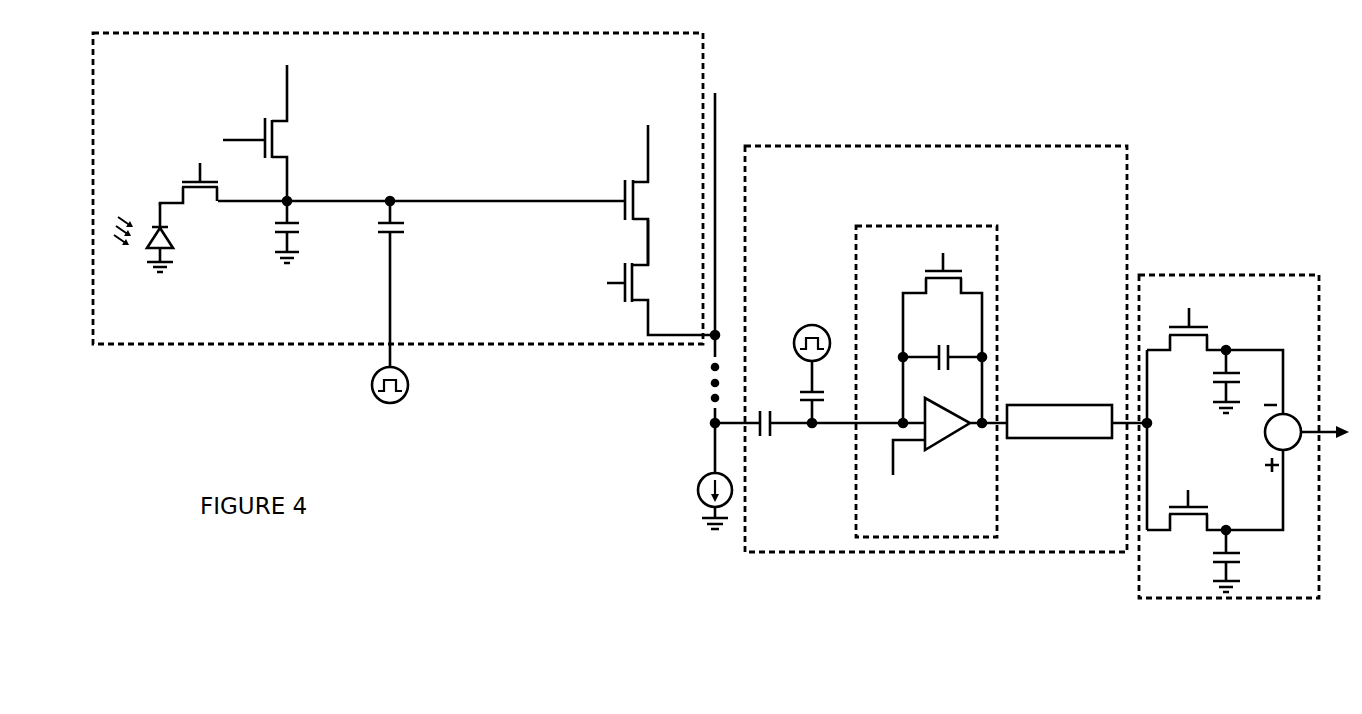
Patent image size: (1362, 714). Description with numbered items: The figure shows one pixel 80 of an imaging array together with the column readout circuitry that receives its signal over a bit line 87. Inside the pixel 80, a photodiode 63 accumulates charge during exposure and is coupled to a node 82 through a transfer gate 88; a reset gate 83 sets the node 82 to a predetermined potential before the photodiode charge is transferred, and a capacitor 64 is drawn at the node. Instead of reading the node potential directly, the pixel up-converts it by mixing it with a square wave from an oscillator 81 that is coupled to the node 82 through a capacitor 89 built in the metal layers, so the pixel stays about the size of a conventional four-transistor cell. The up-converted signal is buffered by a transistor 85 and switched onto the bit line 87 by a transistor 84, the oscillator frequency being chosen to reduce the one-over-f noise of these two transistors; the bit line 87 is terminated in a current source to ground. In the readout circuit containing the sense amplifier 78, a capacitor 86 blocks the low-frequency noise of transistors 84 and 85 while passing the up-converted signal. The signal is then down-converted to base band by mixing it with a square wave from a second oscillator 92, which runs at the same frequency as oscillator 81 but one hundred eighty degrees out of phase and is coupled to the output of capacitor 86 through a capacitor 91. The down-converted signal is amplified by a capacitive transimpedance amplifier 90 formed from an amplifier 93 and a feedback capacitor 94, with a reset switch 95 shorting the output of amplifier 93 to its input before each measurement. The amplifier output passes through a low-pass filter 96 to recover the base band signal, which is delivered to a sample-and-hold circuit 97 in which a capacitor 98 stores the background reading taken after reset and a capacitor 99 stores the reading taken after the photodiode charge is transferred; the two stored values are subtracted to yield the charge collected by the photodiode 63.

The photodiode 63 is at (168, 238).
The storage capacitor 64 is at (298, 232).
The sense amplifier 78 is at (1064, 146).
The pixel 80 is at (140, 346).
The square wave oscillator 81 is at (404, 378).
The node 82 is at (390, 200).
The gate 83 is at (288, 160).
The transistor 84 is at (640, 300).
The transistor 85 is at (638, 219).
The capacitor 86 is at (775, 434).
The bit line 87 is at (715, 130).
The gate 88 is at (184, 195).
The capacitor 89 is at (397, 234).
The capacitive transimpedance amplifier 90 is at (930, 226).
The capacitor 91 is at (804, 386).
The oscillator 92 is at (795, 343).
The amplifier 93 is at (948, 428).
The capacitor 94 is at (955, 352).
The reset switch 95 is at (963, 285).
The low-pass filter 96 is at (1083, 440).
The sample-and-hold circuit 97 is at (1214, 276).
The capacitor 98 is at (1215, 372).
The capacitor 99 is at (1215, 553).